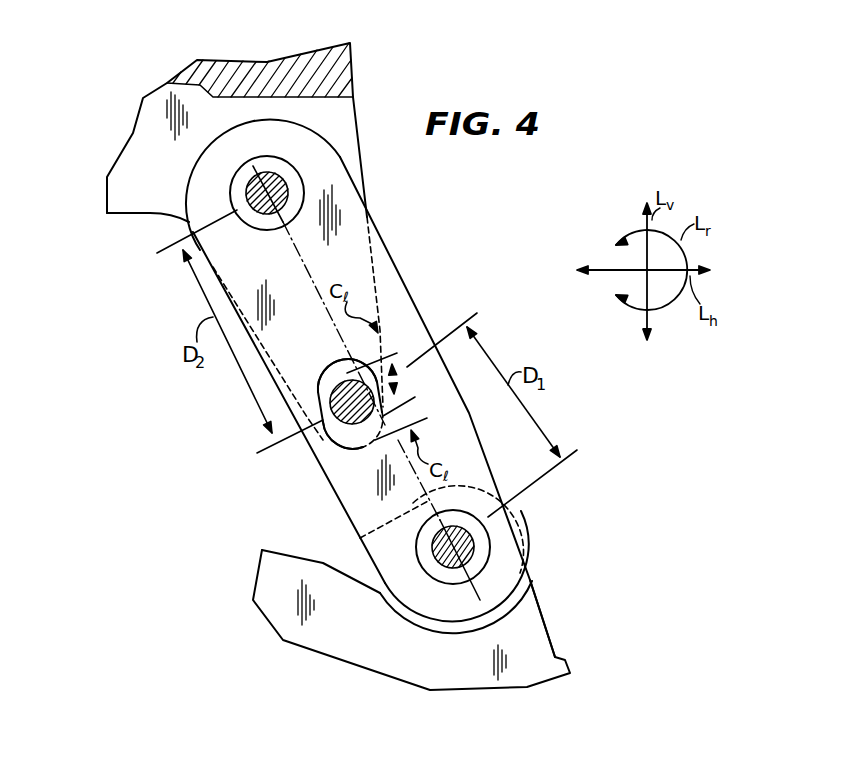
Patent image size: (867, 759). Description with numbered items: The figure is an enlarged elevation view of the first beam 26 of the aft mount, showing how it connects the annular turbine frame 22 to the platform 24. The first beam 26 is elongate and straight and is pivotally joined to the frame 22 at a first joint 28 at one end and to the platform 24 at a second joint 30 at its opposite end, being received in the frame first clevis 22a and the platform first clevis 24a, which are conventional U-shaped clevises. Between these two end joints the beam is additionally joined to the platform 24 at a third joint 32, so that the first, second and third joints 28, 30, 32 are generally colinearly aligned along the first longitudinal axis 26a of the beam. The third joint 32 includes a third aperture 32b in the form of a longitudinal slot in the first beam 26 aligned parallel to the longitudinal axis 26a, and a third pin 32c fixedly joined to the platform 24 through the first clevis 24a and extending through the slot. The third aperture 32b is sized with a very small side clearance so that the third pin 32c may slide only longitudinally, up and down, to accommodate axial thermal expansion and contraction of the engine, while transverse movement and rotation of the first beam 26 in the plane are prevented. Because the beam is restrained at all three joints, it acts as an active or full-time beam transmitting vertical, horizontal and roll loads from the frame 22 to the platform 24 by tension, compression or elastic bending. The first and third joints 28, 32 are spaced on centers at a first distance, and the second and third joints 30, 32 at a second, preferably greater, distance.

The annular turbine frame 22 is at (557, 655).
The frame first clevis 22a is at (527, 590).
The platform 24 is at (357, 78).
The platform first clevis 24a is at (367, 192).
The first beam 26 is at (406, 289).
The first longitudinal axis 26a is at (250, 158).
The first joint 28 is at (434, 564).
The second joint 30 is at (273, 221).
The third joint 32 is at (323, 447).
The third aperture 32b is at (328, 370).
The third pin 32c is at (348, 432).